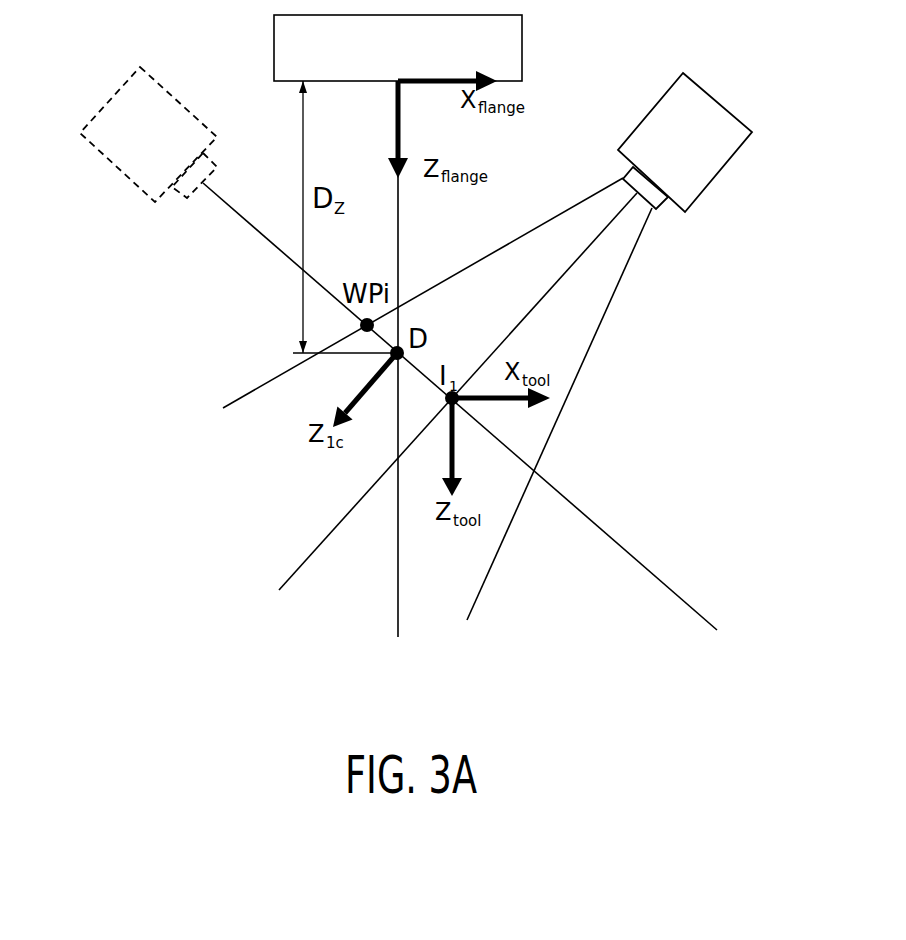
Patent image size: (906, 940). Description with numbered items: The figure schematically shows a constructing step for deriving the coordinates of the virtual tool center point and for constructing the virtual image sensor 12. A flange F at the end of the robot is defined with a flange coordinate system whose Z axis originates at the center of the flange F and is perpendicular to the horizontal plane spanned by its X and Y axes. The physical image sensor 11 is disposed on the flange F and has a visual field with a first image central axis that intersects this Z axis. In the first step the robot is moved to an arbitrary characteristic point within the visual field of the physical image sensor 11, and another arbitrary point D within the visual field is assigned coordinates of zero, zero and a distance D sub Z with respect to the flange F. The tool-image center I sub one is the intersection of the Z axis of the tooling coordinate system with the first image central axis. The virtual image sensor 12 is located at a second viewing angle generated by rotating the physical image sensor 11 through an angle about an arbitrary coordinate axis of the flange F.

The flange F is at (512, 41).
The physical image sensor 11 is at (718, 110).
The virtual image sensor 12 is at (112, 100).